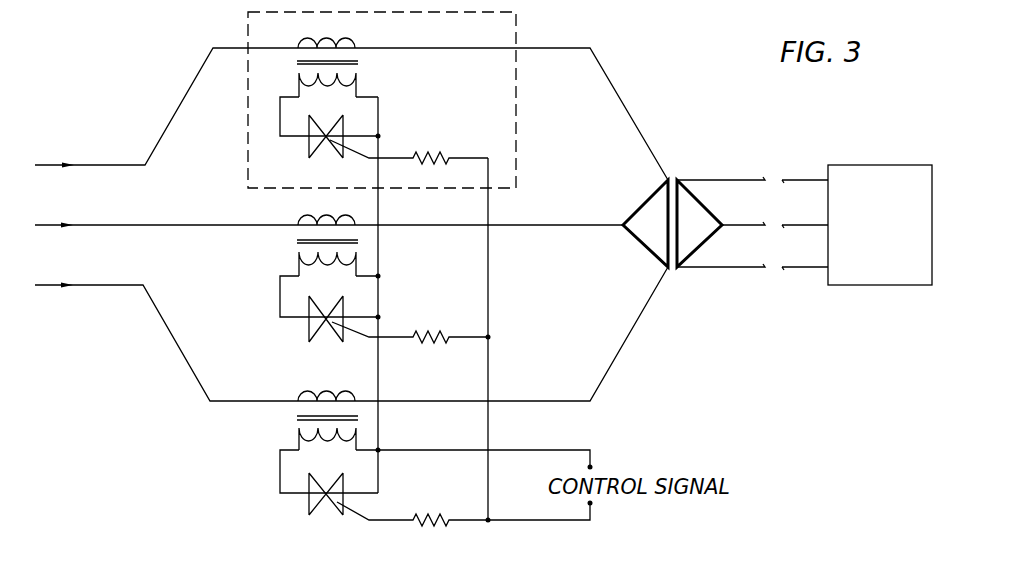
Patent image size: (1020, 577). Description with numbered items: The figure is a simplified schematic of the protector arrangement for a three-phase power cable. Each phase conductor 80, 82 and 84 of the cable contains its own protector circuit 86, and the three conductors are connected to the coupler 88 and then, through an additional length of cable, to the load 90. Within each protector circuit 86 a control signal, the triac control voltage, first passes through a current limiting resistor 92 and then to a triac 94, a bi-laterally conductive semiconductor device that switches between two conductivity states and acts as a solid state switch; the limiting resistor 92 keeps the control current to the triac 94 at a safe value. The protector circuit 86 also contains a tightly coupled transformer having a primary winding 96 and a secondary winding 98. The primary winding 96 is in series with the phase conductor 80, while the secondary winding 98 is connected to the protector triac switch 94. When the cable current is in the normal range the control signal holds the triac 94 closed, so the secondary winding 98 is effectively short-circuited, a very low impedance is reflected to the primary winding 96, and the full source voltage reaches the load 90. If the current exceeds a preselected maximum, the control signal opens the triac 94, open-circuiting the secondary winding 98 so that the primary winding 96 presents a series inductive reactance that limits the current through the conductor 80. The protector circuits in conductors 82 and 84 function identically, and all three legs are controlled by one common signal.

The phase conductor 80 is at (95, 163).
The phase conductor 82 is at (101, 223).
The phase conductor 84 is at (101, 283).
The protector circuit 86 is at (518, 35).
The coupler 88 is at (677, 176).
The load 90 is at (890, 238).
The current limiting resistor 92 is at (431, 157).
The triac 94 is at (309, 148).
The primary winding 96 is at (330, 43).
The secondary winding 98 is at (357, 80).